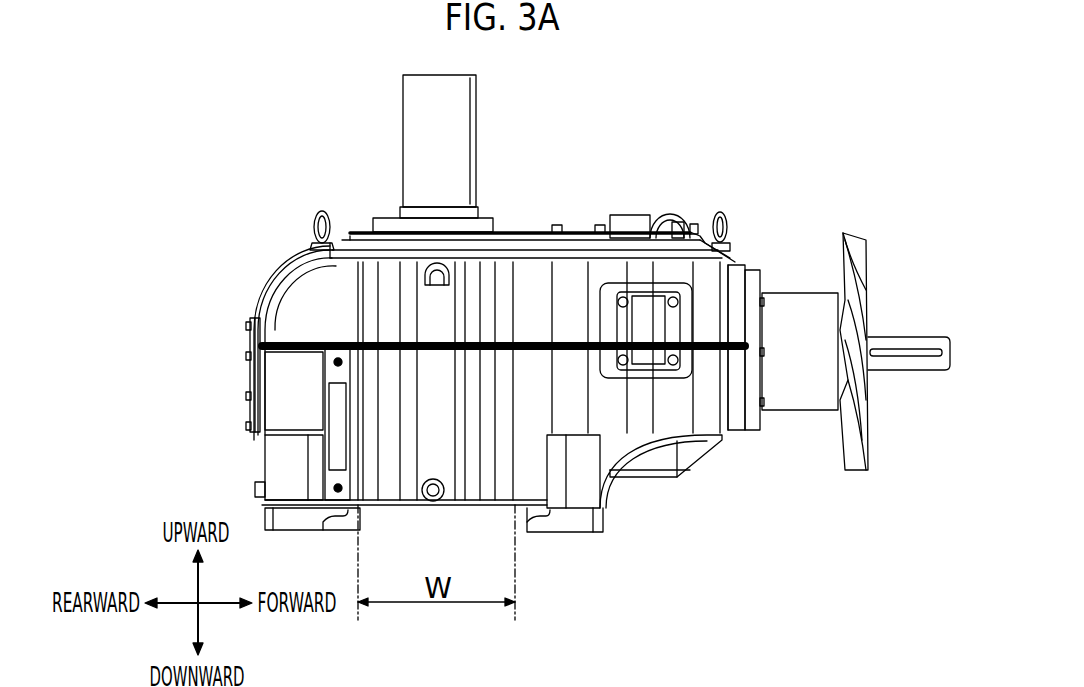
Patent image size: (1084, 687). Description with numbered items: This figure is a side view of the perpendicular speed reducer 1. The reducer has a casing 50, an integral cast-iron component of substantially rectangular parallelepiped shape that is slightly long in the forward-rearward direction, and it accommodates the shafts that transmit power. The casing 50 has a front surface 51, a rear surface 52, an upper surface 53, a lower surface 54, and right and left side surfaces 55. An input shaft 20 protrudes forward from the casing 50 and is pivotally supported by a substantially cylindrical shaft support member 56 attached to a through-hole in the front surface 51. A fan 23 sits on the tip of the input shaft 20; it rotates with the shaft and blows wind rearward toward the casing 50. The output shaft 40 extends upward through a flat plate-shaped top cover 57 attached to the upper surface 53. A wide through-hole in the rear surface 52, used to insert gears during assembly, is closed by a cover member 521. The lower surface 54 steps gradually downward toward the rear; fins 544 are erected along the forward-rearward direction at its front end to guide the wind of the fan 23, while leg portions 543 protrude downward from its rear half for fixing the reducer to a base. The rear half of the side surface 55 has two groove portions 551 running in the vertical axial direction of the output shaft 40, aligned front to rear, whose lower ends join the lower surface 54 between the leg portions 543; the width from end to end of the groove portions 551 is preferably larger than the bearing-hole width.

The perpendicular speed reducer 1 is at (664, 123).
The input shaft 20 is at (898, 340).
The fan 23 is at (855, 265).
The output shaft 40 is at (408, 127).
The casing 50 is at (717, 287).
The front surface 51 is at (730, 308).
The rear surface 52 is at (263, 290).
The cover member 521 is at (248, 378).
The upper surface 53 is at (385, 245).
The lower surface 54 is at (385, 507).
The leg portions 543 is at (302, 530).
The fins 544 is at (688, 463).
The side surface 55 is at (323, 273).
The groove portions 551 is at (388, 490).
The shaft support member 56 is at (797, 413).
The top cover 57 is at (567, 235).